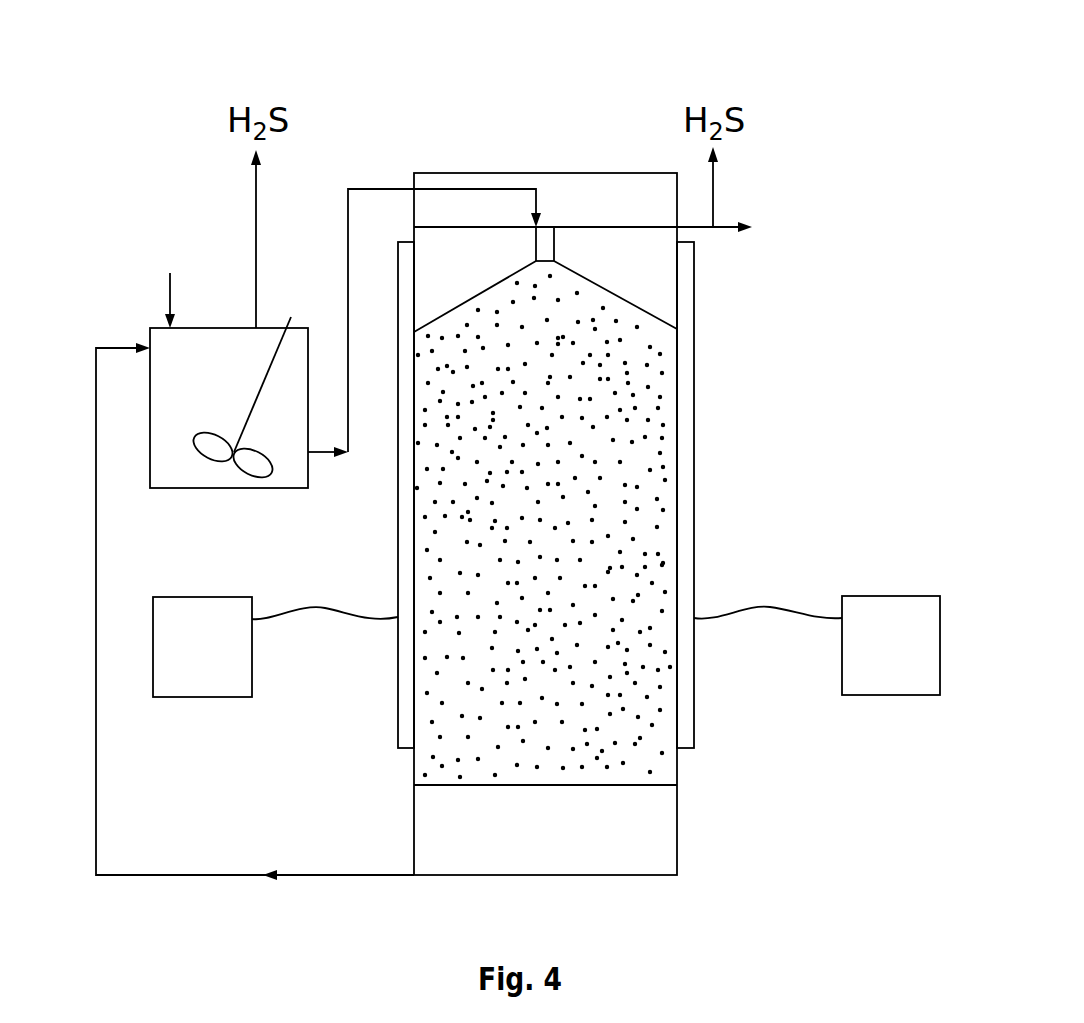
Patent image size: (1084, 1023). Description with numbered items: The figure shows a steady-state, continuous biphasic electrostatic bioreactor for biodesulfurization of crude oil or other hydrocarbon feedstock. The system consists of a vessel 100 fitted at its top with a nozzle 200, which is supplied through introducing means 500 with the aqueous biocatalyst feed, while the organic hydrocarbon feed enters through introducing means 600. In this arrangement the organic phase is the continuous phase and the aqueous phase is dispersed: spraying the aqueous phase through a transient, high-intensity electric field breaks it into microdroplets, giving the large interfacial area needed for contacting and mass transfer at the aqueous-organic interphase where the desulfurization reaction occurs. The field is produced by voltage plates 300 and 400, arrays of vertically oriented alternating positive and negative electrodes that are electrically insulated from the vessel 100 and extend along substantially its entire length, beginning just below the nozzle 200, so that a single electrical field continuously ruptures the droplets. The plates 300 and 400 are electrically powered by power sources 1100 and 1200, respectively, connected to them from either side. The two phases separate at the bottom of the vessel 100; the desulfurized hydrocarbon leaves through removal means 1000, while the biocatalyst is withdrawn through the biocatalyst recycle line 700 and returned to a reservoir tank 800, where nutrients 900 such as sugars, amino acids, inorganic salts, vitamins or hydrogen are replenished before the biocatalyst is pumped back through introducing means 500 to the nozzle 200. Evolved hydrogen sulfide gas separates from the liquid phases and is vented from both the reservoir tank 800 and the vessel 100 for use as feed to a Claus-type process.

The vessel 100 is at (557, 97).
The nozzle 200 is at (555, 234).
The voltage plate 300 is at (395, 522).
The voltage plate 400 is at (696, 528).
The introducing means for the biocatalyst feed 500 is at (366, 189).
The introducing means for the hydrocarbon feed 600 is at (679, 785).
The removal means for the biocatalyst recycle 700 is at (320, 873).
The reservoir tank 800 is at (223, 490).
The nutrients 900 is at (171, 281).
The removal means for desulfurized hydrocarbon 1000 is at (755, 226).
The power source 1100 is at (275, 647).
The power source 1200 is at (817, 645).